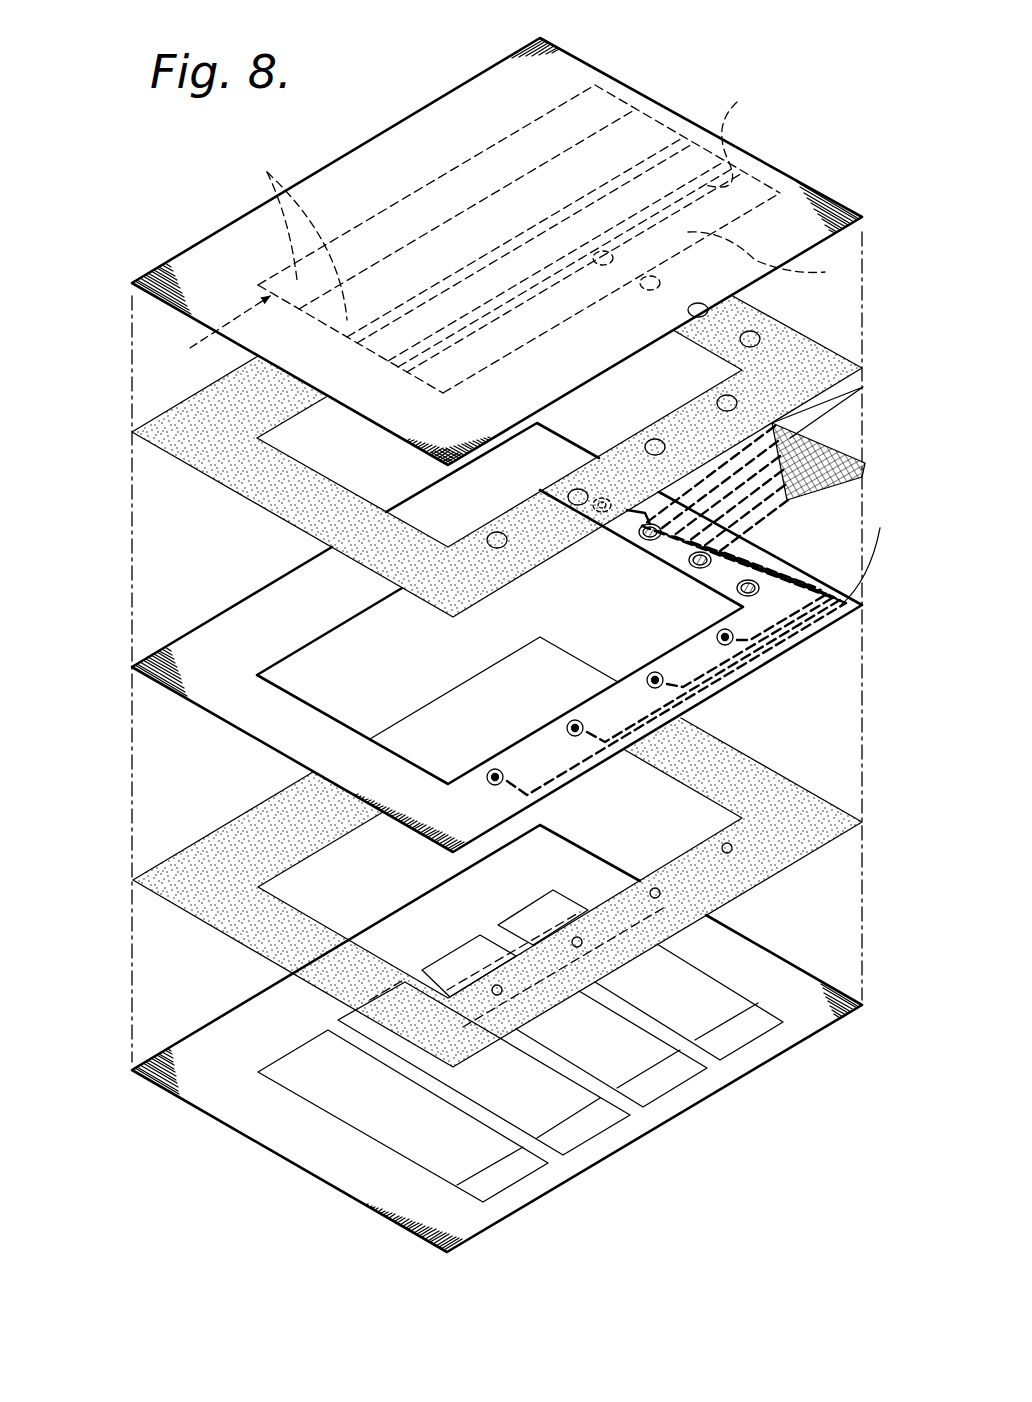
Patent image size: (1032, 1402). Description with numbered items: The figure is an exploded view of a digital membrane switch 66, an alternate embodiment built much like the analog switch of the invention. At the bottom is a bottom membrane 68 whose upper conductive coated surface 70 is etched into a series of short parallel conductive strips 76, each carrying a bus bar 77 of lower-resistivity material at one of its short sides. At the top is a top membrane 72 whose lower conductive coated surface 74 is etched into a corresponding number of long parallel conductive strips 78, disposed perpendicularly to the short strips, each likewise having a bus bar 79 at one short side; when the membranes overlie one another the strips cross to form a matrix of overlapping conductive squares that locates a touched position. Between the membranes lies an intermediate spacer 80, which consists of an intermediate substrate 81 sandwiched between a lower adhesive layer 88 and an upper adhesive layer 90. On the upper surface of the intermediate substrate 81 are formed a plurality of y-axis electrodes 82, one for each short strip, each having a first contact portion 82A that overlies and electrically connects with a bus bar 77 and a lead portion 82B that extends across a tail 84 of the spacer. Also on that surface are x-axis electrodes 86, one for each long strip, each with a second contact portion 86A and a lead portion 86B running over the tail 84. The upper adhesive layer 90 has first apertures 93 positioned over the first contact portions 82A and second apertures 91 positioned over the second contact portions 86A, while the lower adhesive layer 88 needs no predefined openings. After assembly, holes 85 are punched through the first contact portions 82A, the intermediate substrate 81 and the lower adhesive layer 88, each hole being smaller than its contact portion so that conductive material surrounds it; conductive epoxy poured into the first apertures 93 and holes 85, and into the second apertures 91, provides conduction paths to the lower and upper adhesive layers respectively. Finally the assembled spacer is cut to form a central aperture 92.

The digital membrane switch 66 is at (814, 46).
The bottom membrane 68 is at (497, 1038).
The upper conductive coated surface 70 is at (365, 1150).
The top membrane 72 is at (497, 242).
The lower conductive coated surface 74 is at (214, 329).
The short parallel conductive strips 76 is at (516, 925).
The bus bar 77 is at (520, 1178).
The long parallel conductive strips 78 is at (553, 200).
The bus bar 79 is at (597, 102).
The intermediate spacer 80 is at (120, 722).
The intermediate substrate 81 is at (525, 610).
The y-axis electrodes 82 is at (713, 615).
The first contact portion 82A is at (752, 640).
The lead portion 82B is at (834, 617).
The tail 84 is at (865, 458).
The holes 85 is at (493, 768).
The x-axis electrodes 86 is at (749, 489).
The second contact portion 86A is at (744, 593).
The lead portion 86B is at (842, 403).
The lower adhesive layer 88 is at (497, 919).
The upper adhesive layer 90 is at (497, 453).
The second apertures 91 is at (753, 337).
The central aperture 92 is at (356, 681).
The first apertures 93 is at (495, 538).